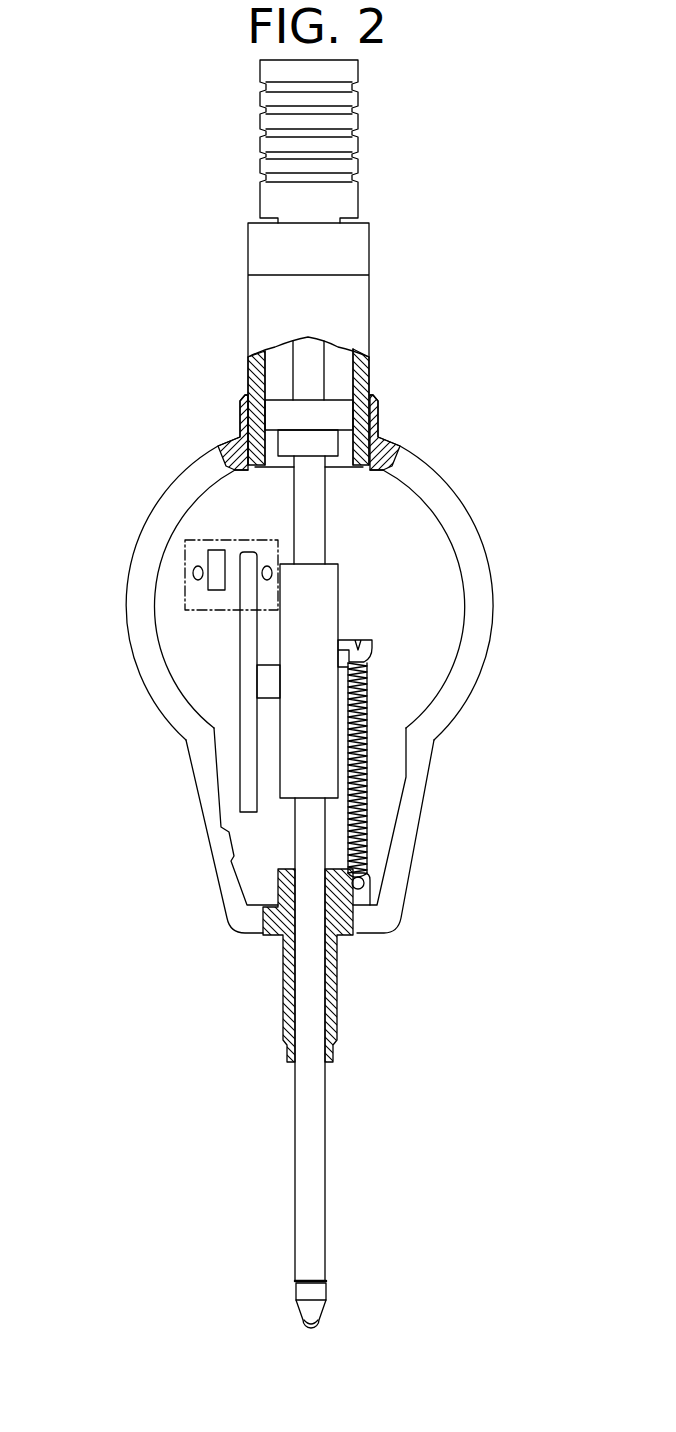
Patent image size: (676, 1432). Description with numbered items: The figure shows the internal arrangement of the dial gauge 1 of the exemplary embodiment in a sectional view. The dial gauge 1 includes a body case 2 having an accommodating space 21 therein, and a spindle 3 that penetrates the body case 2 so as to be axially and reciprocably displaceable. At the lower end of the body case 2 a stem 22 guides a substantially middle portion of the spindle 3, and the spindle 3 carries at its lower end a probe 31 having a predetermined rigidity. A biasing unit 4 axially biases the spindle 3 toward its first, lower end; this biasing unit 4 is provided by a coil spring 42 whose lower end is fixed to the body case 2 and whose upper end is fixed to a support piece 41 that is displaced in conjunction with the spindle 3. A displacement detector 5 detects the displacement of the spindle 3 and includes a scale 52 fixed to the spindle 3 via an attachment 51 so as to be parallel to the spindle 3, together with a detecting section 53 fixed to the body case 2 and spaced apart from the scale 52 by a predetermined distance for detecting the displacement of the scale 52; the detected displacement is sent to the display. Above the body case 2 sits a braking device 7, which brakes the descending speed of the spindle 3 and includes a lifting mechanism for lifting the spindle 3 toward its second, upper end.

The dial gauge 1 is at (460, 197).
The body case 2 is at (482, 590).
The accommodating space 21 is at (422, 533).
The stem 22 is at (333, 983).
The spindle 3 is at (320, 1142).
The probe 31 is at (322, 1318).
The biasing unit 4 is at (367, 802).
The support piece 41 is at (372, 645).
The coil spring 42 is at (365, 763).
The displacement detector 5 is at (80, 538).
The attachment 51 is at (270, 683).
The scale 52 is at (247, 652).
The detecting section 53 is at (215, 563).
The braking device 7 is at (263, 310).